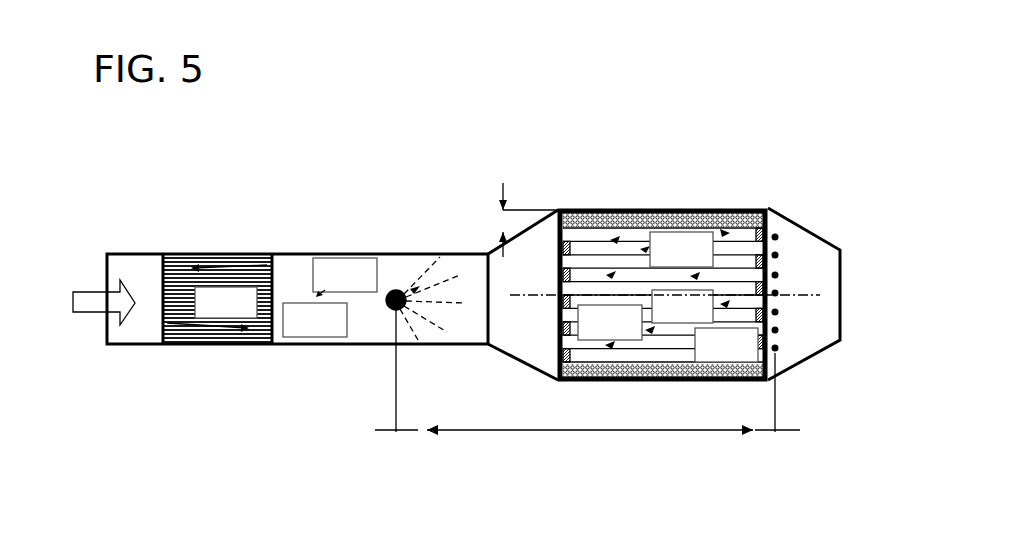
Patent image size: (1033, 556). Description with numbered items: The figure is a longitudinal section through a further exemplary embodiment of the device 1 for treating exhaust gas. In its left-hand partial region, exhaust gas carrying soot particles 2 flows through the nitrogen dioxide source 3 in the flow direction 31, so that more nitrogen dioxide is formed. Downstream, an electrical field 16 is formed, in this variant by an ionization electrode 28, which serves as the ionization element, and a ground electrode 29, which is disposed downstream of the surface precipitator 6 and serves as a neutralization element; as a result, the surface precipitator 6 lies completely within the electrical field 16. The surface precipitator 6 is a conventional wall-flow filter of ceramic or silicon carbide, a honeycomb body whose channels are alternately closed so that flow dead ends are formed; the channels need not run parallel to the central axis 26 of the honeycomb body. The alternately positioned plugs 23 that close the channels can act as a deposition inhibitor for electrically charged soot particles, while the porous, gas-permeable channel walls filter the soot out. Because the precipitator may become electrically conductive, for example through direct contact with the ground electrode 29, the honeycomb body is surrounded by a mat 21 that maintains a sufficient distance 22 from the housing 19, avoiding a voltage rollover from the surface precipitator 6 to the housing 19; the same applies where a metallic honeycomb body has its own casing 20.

The device 1 is at (257, 422).
The soot particles 2 is at (142, 293).
The nitrogen dioxide source 3 is at (222, 230).
The surface precipitator 6 is at (706, 114).
The electrical field 16 is at (552, 430).
The housing 19 is at (603, 208).
The casing 20 is at (740, 208).
The mat 21 is at (675, 208).
The distance 22 is at (503, 217).
The plugs 23 is at (545, 372).
The central axis 26 is at (805, 295).
The ionization electrode 28 is at (396, 432).
The ground electrode 29 is at (775, 432).
The flow direction 31 is at (83, 310).